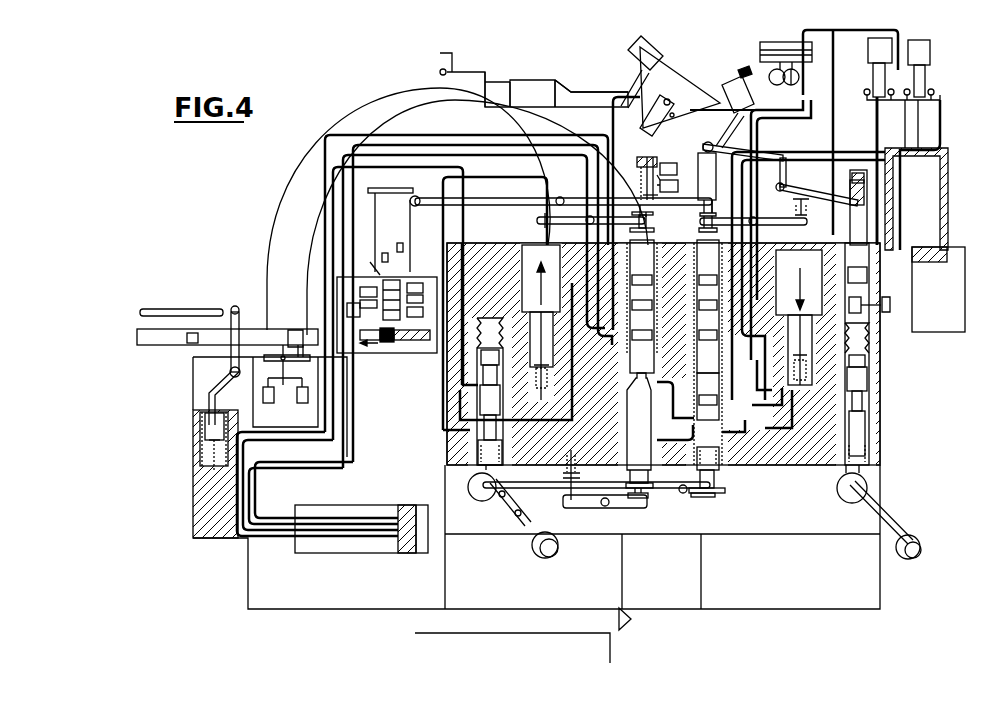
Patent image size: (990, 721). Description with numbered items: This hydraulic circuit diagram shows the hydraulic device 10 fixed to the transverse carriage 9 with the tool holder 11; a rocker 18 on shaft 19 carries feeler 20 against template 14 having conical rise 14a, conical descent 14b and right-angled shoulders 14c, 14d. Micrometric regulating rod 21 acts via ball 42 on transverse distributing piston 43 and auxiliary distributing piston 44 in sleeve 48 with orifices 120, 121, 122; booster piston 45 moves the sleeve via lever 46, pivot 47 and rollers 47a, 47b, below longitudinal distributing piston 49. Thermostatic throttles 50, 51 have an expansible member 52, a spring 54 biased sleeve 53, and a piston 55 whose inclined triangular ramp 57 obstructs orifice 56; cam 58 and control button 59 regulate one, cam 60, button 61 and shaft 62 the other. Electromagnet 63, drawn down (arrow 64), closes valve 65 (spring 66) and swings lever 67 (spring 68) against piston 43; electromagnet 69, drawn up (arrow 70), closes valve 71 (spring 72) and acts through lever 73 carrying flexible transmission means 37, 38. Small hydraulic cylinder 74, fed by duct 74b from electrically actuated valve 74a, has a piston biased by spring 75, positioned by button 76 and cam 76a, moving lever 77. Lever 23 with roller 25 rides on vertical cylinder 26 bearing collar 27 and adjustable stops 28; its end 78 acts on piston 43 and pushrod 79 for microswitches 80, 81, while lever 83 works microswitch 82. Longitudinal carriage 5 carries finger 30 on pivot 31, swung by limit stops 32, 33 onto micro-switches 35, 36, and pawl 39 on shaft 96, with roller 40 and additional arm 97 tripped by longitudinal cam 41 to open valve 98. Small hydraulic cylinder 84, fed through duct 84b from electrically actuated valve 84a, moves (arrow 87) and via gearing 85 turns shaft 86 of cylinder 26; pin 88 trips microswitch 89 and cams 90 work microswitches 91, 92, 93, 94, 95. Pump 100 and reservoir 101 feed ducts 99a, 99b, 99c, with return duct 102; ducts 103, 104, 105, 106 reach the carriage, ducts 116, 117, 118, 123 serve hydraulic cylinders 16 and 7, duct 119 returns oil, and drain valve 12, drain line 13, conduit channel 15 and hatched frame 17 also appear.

The longitudinal carriage 5 is at (275, 585).
The hydraulic cylinder 7 is at (352, 540).
The transverse carriage 9 is at (724, 585).
The hydraulic device 10 is at (890, 420).
The tool holder 11 is at (671, 590).
The drain valve 12 is at (631, 619).
The drain line 13 is at (603, 648).
The template 14 is at (590, 85).
The conical rise 14a is at (562, 86).
The conical descent 14b is at (522, 80).
The right-angled shoulder 14c is at (486, 83).
The right-angled shoulder 14d is at (452, 53).
The conduit channel 15 is at (268, 536).
The hydraulic cylinder 16 is at (940, 320).
The hatched frame 17 is at (948, 193).
The rocker 18 is at (680, 80).
The shaft 19 is at (667, 97).
The feeler 20 is at (624, 92).
The micrometric regulating rod 21 is at (728, 82).
The lever 23 is at (508, 205).
The roller 25 is at (418, 196).
The vertical cylinder 26 is at (390, 213).
The collar 27 is at (396, 190).
The adjustable stops 28 is at (399, 245).
The finger 30 is at (296, 350).
The pivot 31 is at (288, 360).
The limit stop 32 is at (192, 345).
The limit stop 33 is at (296, 331).
The micro-switch 35 is at (270, 397).
The micro-switch 36 is at (297, 397).
The flexible transmission means 37 is at (267, 232).
The flexible transmission means 38 is at (307, 232).
The pawl 39 is at (239, 340).
The roller 40 is at (233, 308).
The longitudinal cam 41 is at (172, 309).
The ball 42 is at (706, 171).
The transverse distributing piston 43 is at (708, 352).
The auxiliary distributing piston 44 is at (708, 396).
The booster piston 45 is at (639, 430).
The lever 46 is at (664, 490).
The pivot 47 is at (683, 494).
The roller 47a is at (704, 498).
The roller 47b is at (637, 499).
The sleeve 48 is at (720, 463).
The longitudinal distributing piston 49 is at (642, 292).
The thermostatic throttle 50 is at (868, 387).
The thermostatic throttle 51 is at (476, 410).
The expansible member 52 is at (503, 337).
The sleeve 53 is at (476, 380).
The spring 54 is at (476, 448).
The piston 55 is at (476, 430).
The orifice 56 is at (497, 400).
The inclined triangular ramp 57 is at (476, 396).
The cam 58 is at (841, 495).
The control button 59 is at (917, 538).
The cam 60 is at (472, 488).
The button 61 is at (532, 552).
The shaft 62 is at (505, 510).
The electromagnet 63 is at (803, 262).
The arrow 64 is at (799, 282).
The valve 65 is at (815, 350).
The spring 66 is at (778, 405).
The lever 67 is at (777, 218).
The spring 68 is at (810, 207).
The electromagnet 69 is at (538, 257).
The arrow 70 is at (541, 278).
The valve 71 is at (552, 366).
The spring 72 is at (550, 380).
The lever 73 is at (563, 224).
The small hydraulic cylinder 74 is at (860, 222).
The electrically actuated valve 74a is at (868, 51).
The duct 74b is at (880, 208).
The spring 75 is at (868, 269).
The button 76 is at (884, 303).
The cam 76a is at (870, 318).
The lever 77 is at (808, 196).
The end 78 is at (707, 205).
The pushrod 79 is at (643, 195).
The microswitch 80 is at (670, 168).
The microswitch 81 is at (670, 192).
The microswitch 82 is at (580, 468).
The lever 83 is at (583, 508).
The small hydraulic cylinder 84 is at (410, 342).
The electrically actuated valve 84a is at (930, 52).
The duct 84b is at (508, 179).
The gearing 85 is at (387, 342).
The shaft 86 is at (392, 282).
The arrow 87 is at (365, 342).
The pin 88 is at (360, 345).
The microswitch 89 is at (345, 310).
The cams 90 is at (366, 260).
The microswitch 91 is at (413, 283).
The microswitch 92 is at (358, 290).
The microswitch 93 is at (423, 296).
The microswitch 94 is at (358, 302).
The microswitch 95 is at (425, 335).
The shaft 96 is at (230, 372).
The additional arm 97 is at (210, 386).
The valve 98 is at (205, 441).
The duct 99a is at (612, 100).
The duct 99b is at (698, 108).
The duct 99c is at (775, 118).
The pump 100 is at (799, 77).
The reservoir 101 is at (760, 47).
The return duct 102 is at (835, 78).
The duct 103 is at (365, 135).
The duct 104 is at (390, 145).
The duct 105 is at (413, 155).
The duct 106 is at (445, 165).
The duct 116 is at (845, 152).
The duct 117 is at (870, 160).
The duct 118 is at (772, 395).
The duct 119 is at (794, 426).
The orifice 120 is at (690, 400).
The orifice 121 is at (684, 440).
The orifice 122 is at (738, 432).
The duct 123 is at (574, 412).